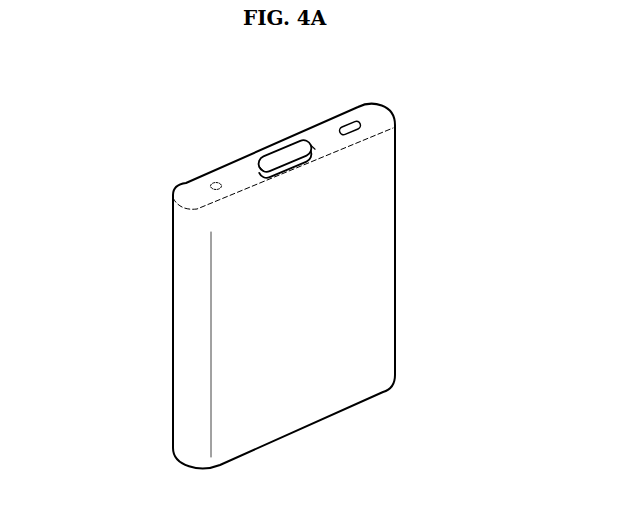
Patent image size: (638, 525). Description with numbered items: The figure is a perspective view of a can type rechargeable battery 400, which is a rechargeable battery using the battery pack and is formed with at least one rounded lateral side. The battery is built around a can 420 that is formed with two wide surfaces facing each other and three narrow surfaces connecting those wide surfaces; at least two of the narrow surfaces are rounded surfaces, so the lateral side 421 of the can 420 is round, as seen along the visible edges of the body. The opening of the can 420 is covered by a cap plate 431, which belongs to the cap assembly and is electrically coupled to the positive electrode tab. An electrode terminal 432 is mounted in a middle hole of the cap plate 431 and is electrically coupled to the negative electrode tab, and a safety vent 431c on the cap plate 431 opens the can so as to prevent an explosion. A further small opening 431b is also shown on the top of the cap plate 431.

The can type rechargeable battery 400 is at (279, 265).
The can 420 is at (335, 303).
The rounded lateral side 421 is at (397, 213).
The cap plate 431 is at (376, 118).
The hole in top surface 431b is at (213, 181).
The safety vent 431c is at (350, 125).
The electrode terminal 432 is at (283, 150).